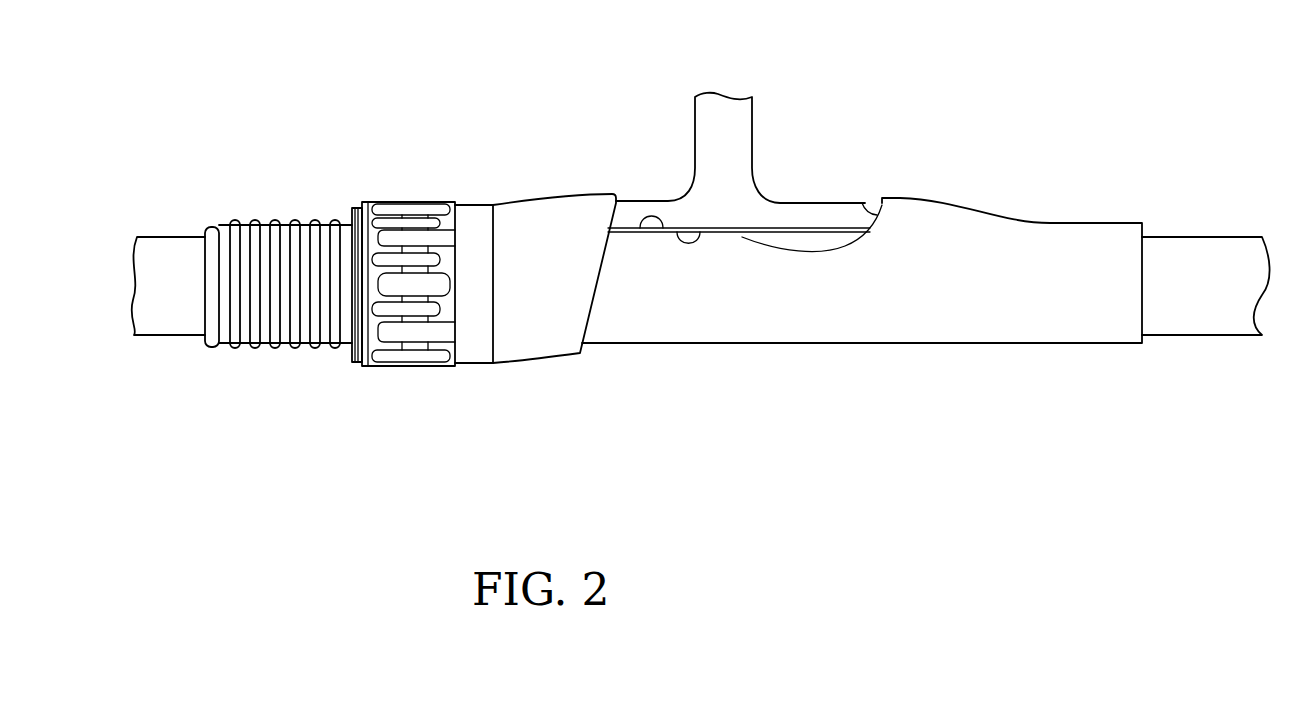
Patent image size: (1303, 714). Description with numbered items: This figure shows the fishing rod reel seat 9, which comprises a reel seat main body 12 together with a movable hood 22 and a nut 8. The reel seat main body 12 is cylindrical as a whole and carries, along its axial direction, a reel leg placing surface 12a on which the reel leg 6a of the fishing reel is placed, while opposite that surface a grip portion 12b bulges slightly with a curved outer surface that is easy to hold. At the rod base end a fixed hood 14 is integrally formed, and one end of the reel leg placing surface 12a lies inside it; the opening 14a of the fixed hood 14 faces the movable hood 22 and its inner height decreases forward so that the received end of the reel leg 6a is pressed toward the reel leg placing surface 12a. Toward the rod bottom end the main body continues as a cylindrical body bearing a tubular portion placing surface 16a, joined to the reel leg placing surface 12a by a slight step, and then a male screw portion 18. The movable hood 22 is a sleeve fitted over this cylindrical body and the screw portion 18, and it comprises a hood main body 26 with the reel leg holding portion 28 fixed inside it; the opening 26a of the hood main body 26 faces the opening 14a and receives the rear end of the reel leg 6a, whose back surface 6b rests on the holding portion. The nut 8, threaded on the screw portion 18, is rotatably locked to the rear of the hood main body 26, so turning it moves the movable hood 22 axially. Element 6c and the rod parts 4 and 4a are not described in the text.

The universal cord 4 is at (1207, 237).
The cable 4a is at (175, 237).
The reel leg 6a is at (705, 113).
The back surface of the reel leg 6b is at (680, 226).
The electrical contact 6c is at (805, 198).
The nut 8 is at (400, 203).
The reel seat 9 is at (862, 275).
The reel seat main body 12 is at (932, 343).
The reel leg placing surface 12a is at (635, 213).
The grip portion 12b is at (777, 343).
The fixed hood 14 is at (945, 198).
The opening 14a is at (862, 203).
The tubular portion placing surface 16a is at (323, 225).
The screw portion 18 is at (312, 345).
The movable hood 22 is at (602, 108).
The hood main body 26 is at (480, 205).
The opening 26a is at (623, 212).
The reel leg holding portion 28 is at (617, 194).